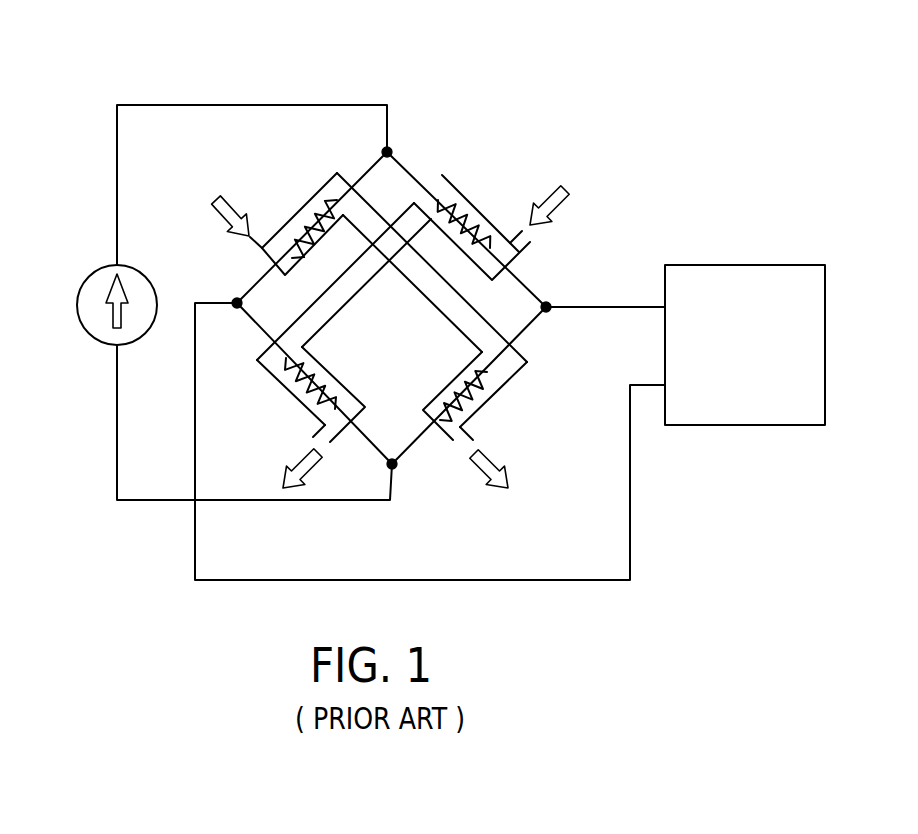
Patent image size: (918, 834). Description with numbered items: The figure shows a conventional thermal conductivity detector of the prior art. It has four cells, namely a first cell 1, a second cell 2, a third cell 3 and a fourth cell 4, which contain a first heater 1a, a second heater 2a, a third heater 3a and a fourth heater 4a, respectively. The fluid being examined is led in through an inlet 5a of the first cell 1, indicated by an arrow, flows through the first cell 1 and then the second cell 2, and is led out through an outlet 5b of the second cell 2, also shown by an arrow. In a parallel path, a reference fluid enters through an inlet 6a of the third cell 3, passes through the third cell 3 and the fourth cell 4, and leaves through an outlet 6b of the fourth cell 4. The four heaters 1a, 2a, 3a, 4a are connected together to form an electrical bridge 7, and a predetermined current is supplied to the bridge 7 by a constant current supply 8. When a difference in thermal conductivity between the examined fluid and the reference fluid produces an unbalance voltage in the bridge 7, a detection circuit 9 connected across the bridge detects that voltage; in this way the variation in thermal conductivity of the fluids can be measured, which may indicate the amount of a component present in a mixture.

The first cell 1 is at (296, 206).
The first heater 1a is at (312, 205).
The second cell 2 is at (492, 415).
The second heater 2a is at (489, 380).
The third cell 3 is at (484, 222).
The third heater 3a is at (478, 205).
The fourth cell 4 is at (305, 412).
The fourth heater 4a is at (292, 390).
The inlet 5a is at (258, 240).
The outlet 5b is at (463, 447).
The inlet 6a is at (519, 239).
The outlet 6b is at (328, 438).
The electrical bridge 7 is at (457, 127).
The constant current supply 8 is at (92, 270).
The detection circuit 9 is at (742, 292).